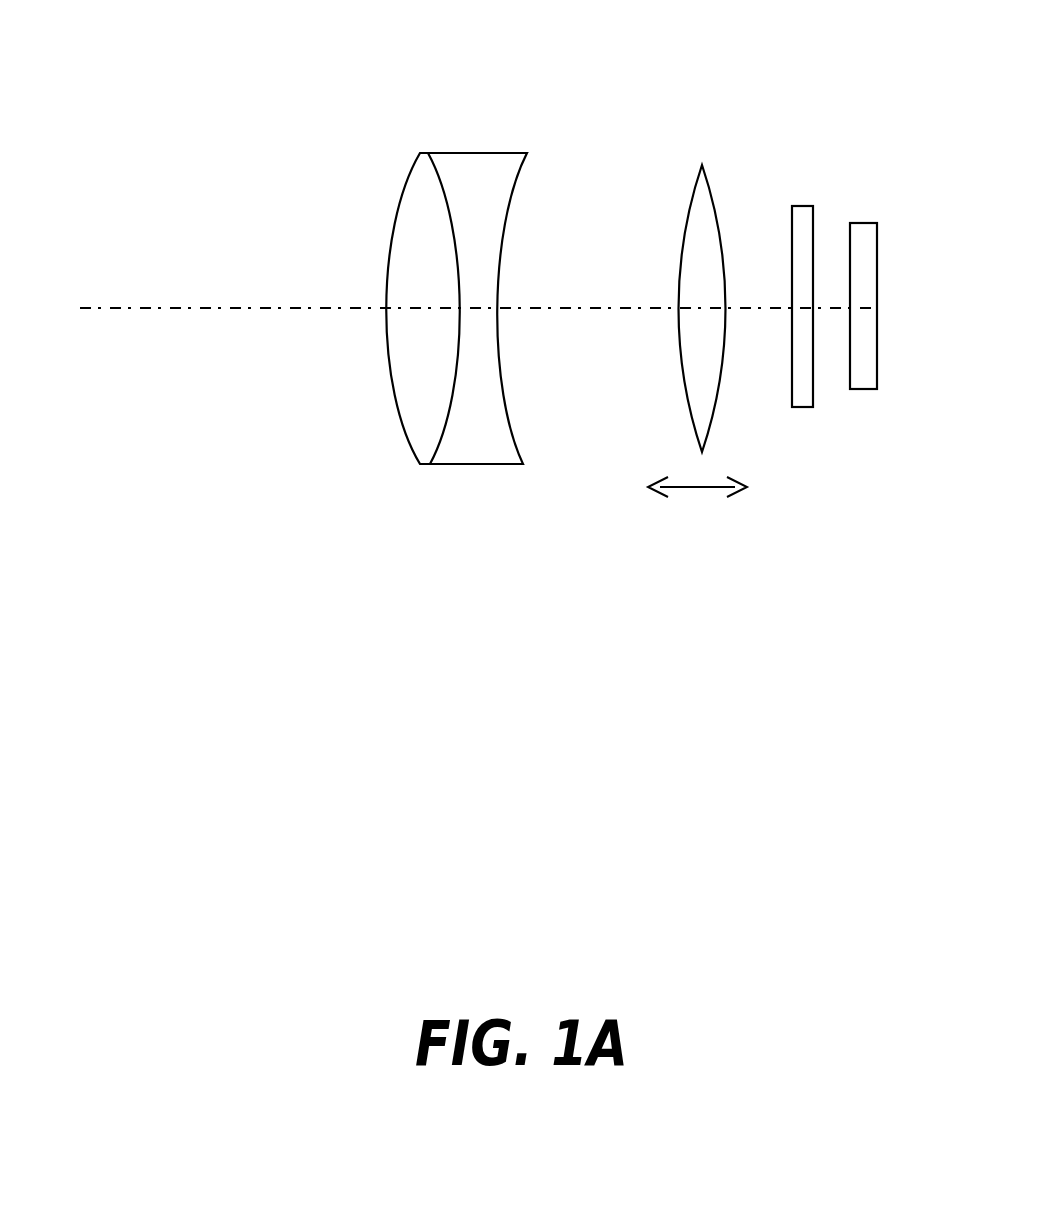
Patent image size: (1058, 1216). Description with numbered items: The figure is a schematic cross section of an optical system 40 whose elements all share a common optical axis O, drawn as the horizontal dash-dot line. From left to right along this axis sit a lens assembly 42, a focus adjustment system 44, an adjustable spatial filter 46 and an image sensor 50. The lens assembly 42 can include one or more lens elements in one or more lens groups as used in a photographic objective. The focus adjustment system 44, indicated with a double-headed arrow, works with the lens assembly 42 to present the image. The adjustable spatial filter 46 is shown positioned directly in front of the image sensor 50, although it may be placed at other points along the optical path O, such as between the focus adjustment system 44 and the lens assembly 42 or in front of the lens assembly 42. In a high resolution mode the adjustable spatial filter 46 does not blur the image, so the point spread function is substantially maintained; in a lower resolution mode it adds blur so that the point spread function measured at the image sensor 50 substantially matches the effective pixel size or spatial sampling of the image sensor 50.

The optical system 40 is at (612, 47).
The optical axis O is at (262, 308).
The lens assembly 42 is at (480, 465).
The focus adjustment system 44 is at (702, 165).
The adjustable spatial filter 46 is at (800, 408).
The image sensor 50 is at (877, 267).